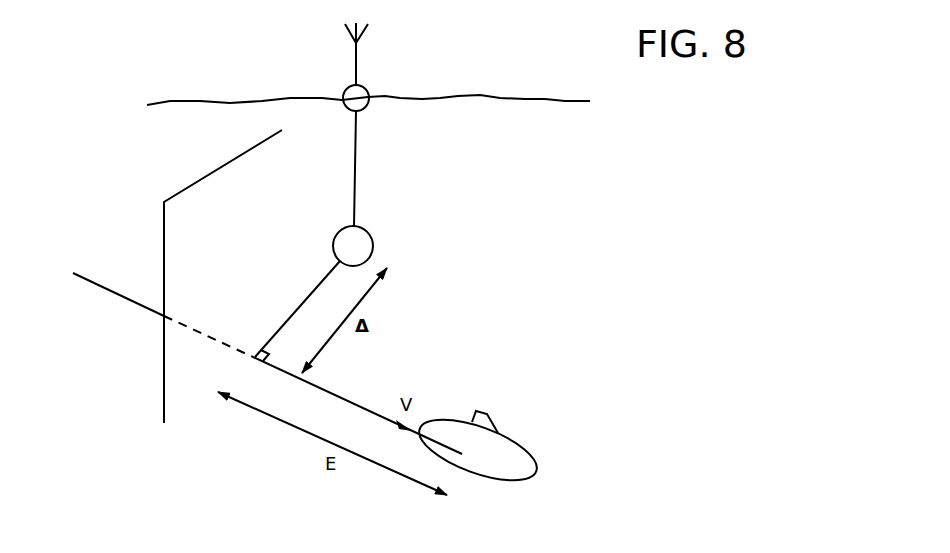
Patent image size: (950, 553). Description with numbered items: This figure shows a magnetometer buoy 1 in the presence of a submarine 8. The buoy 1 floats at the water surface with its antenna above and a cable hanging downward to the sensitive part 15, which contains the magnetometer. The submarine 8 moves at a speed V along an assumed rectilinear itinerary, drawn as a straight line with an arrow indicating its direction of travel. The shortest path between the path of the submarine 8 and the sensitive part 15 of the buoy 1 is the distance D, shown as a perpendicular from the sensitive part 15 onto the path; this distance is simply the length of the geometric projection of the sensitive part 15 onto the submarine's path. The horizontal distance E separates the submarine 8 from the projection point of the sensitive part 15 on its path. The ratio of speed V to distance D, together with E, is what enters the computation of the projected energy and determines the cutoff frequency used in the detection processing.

The buoy 1 is at (383, 175).
The sensitive part 15 is at (363, 247).
The submarine 8 is at (507, 453).